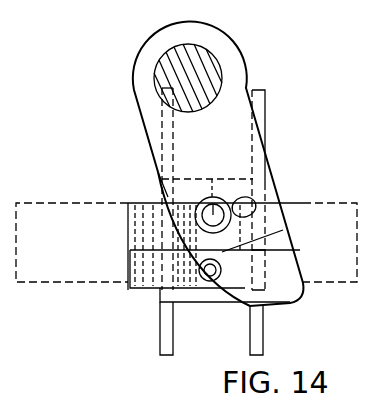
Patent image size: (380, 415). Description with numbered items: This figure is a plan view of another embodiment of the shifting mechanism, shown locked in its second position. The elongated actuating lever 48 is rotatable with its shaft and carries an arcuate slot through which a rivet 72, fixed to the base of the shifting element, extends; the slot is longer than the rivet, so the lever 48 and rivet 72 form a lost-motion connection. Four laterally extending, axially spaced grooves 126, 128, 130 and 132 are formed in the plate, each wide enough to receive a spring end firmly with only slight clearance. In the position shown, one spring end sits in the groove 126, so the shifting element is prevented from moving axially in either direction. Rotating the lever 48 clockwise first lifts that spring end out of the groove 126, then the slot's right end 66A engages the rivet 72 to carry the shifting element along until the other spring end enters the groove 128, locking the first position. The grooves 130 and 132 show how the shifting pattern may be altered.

The actuating lever 48 is at (157, 118).
The right end of the slot 66A is at (244, 204).
The rivet 72 is at (212, 179).
The groove 126 is at (135, 203).
The groove 128 is at (157, 173).
The groove 130 is at (190, 306).
The groove 132 is at (265, 306).